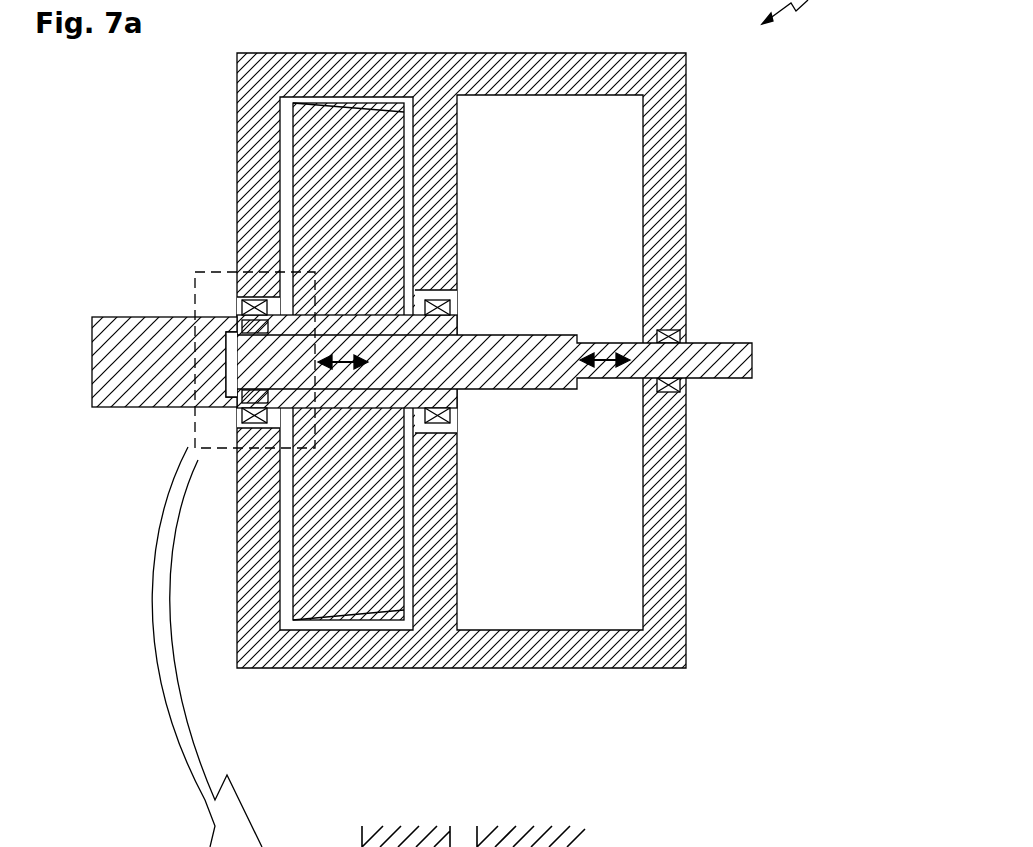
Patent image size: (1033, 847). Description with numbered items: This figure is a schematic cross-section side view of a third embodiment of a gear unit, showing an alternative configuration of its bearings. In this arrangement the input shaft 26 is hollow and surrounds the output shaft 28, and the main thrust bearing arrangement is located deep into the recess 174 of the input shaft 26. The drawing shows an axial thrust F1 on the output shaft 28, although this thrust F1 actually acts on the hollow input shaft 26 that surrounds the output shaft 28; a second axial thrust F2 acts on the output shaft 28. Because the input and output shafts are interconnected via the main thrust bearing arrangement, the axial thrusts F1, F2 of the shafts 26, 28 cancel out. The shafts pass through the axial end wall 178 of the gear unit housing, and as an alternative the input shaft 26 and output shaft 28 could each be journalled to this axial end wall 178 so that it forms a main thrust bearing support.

The axial end wall 178 is at (247, 188).
The recess 174 is at (348, 395).
The input shaft 26 is at (128, 400).
The output shaft 28 is at (738, 346).
The axial thrust F1 is at (340, 335).
The axial thrust F2 is at (606, 334).